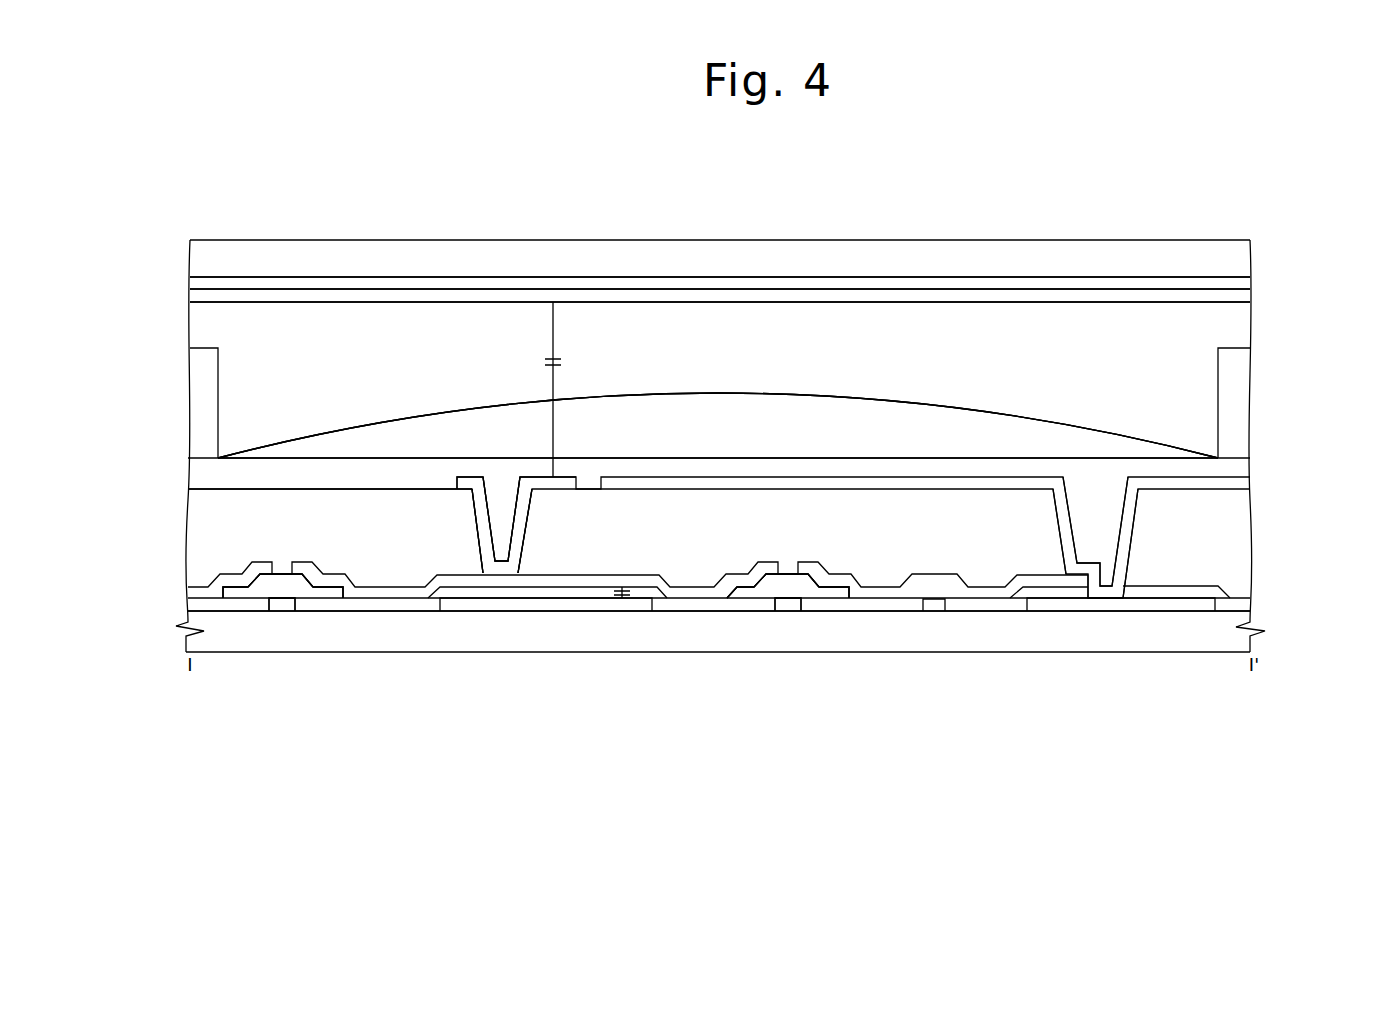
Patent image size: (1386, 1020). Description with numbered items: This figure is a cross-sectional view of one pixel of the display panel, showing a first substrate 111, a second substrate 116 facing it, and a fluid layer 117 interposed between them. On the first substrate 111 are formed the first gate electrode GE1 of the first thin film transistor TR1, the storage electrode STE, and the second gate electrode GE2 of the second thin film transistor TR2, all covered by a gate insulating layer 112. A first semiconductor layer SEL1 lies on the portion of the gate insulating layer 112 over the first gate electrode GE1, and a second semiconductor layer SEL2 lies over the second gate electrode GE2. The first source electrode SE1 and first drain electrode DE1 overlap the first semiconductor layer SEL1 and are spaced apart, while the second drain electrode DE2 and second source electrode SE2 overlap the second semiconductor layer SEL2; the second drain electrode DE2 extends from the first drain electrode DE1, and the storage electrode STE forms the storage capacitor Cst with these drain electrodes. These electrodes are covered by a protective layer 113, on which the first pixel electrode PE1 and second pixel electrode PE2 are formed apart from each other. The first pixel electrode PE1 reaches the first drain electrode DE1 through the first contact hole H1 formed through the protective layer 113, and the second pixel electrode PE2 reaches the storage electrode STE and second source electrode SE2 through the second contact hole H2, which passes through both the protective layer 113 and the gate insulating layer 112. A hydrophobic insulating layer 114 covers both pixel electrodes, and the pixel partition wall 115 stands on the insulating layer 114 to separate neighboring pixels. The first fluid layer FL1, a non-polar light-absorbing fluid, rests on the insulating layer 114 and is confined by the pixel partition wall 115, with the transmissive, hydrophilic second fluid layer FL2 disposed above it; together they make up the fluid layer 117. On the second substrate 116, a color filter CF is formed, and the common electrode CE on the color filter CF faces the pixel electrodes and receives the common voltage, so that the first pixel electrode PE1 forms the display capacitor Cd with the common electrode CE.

The second substrate 116 is at (1240, 259).
The color filter CF is at (1238, 285).
The common electrode CE is at (1238, 297).
The second fluid layer FL2 is at (1240, 334).
The first fluid layer FL1 is at (1112, 443).
The fluid layer 117 is at (1333, 318).
The pixel partition wall 115 is at (1240, 401).
The insulating layer 114 is at (1240, 473).
The second pixel electrode PE2 is at (1243, 488).
The first pixel electrode PE1 is at (498, 565).
The first contact hole H1 is at (500, 492).
The second contact hole H2 is at (1088, 492).
The display capacitor Cd is at (563, 361).
The storage capacitor Cst is at (627, 586).
The protective layer 113 is at (1240, 557).
The gate insulating layer 112 is at (1240, 608).
The first substrate 111 is at (1240, 642).
The storage electrode STE is at (585, 600).
The first thin film transistor TR1 is at (405, 716).
The first source electrode SE1 is at (236, 582).
The first gate electrode GE1 is at (282, 605).
The first semiconductor layer SEL1 is at (332, 596).
The first drain electrode DE1 is at (356, 592).
The second thin film transistor TR2 is at (915, 716).
The second drain electrode DE2 is at (742, 583).
The second gate electrode GE2 is at (788, 605).
The second semiconductor layer SEL2 is at (838, 596).
The second source electrode SE2 is at (863, 592).